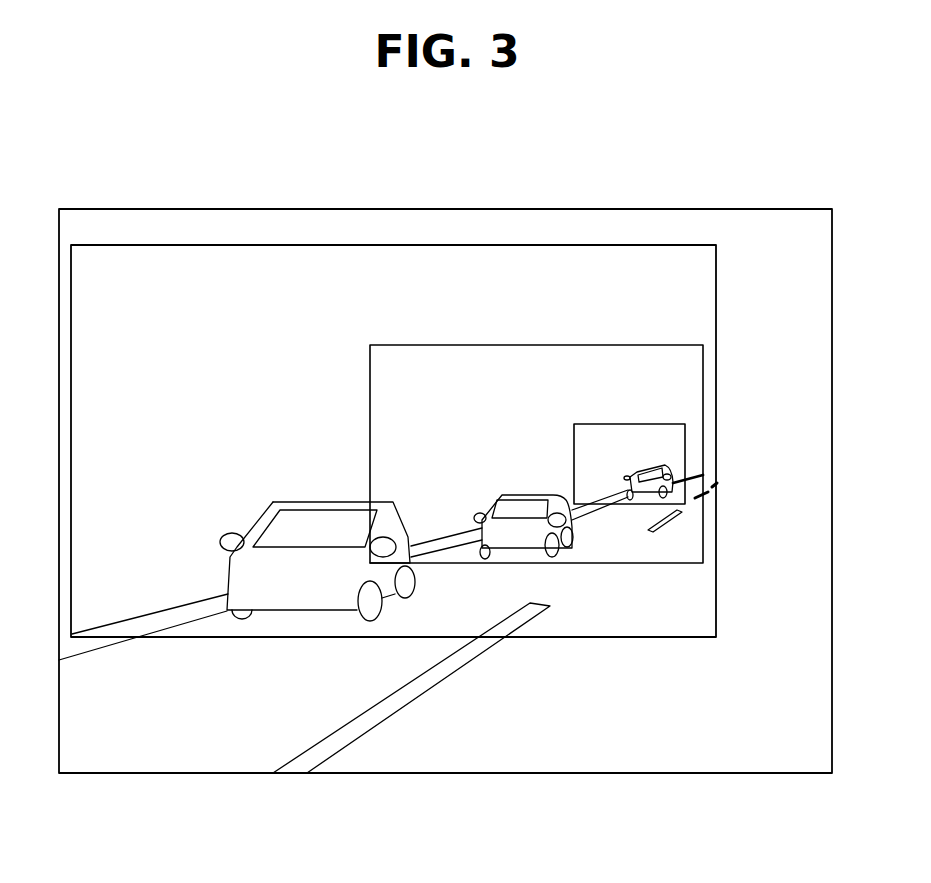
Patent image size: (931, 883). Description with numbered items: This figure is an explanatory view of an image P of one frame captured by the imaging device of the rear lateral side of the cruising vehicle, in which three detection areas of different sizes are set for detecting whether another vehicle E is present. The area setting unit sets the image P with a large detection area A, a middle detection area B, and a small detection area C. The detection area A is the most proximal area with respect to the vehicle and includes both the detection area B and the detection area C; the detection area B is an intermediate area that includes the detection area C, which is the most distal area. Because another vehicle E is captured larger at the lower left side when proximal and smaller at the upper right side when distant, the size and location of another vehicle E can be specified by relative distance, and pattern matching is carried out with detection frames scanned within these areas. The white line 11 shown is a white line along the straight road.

The image P is at (144, 212).
The detection area A is at (194, 247).
The detection area B is at (405, 345).
The detection area C is at (598, 424).
The another vehicle E is at (272, 502).
The white line 11 is at (137, 617).